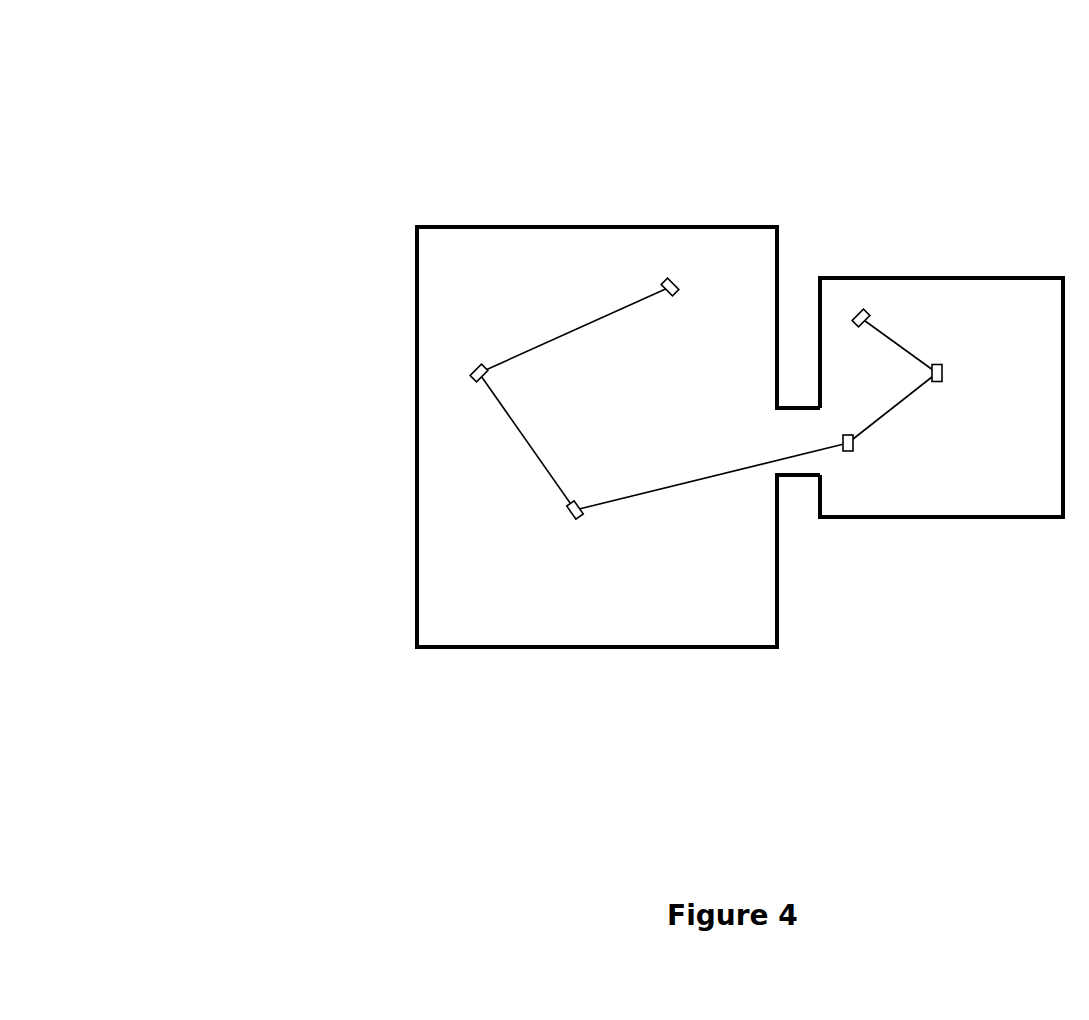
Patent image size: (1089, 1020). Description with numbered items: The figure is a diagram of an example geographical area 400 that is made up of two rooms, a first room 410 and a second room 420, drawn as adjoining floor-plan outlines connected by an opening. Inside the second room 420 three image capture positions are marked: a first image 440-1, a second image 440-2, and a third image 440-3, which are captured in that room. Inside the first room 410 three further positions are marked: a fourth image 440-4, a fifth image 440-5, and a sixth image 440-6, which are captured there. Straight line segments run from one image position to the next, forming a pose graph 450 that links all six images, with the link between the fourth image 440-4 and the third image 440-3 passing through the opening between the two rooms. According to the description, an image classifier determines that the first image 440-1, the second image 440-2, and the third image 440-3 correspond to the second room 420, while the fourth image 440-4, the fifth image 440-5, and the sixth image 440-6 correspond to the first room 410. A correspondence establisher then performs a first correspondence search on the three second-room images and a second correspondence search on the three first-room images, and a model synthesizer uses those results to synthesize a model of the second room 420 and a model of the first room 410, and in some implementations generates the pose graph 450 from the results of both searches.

The geographical area 400 is at (207, 51).
The first room 410 is at (558, 634).
The second room 420 is at (1049, 507).
The pose graph 450 is at (551, 316).
The first image 440-1 is at (868, 312).
The second image 440-2 is at (943, 377).
The third image 440-3 is at (853, 450).
The fourth image 440-4 is at (577, 519).
The fifth image 440-5 is at (476, 382).
The sixth image 440-6 is at (663, 281).